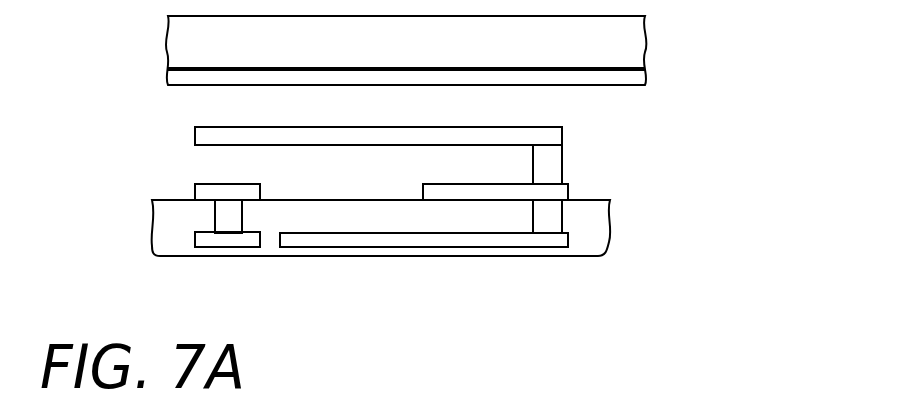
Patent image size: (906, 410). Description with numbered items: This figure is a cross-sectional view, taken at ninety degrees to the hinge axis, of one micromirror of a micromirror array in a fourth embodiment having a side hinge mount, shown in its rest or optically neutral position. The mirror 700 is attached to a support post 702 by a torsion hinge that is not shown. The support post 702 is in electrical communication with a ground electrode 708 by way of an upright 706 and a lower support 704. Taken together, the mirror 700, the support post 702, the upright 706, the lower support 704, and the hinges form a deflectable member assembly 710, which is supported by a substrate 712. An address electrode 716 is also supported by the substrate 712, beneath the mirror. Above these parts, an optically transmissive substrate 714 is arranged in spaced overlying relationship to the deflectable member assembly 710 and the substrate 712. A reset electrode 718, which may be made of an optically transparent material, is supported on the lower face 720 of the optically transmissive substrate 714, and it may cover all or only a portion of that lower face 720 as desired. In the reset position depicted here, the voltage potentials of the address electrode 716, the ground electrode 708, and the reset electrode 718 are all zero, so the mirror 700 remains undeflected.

The mirror 700 is at (537, 127).
The support post 702 is at (562, 165).
The lower support 704 is at (568, 190).
The upright 706 is at (562, 218).
The ground electrode 708 is at (322, 247).
The deflectable member assembly 710 is at (172, 131).
The substrate 712 is at (164, 230).
The optically transmissive substrate 714 is at (278, 57).
The address electrode 716 is at (242, 248).
The reset electrode 718 is at (577, 85).
The lower face 720 is at (285, 69).